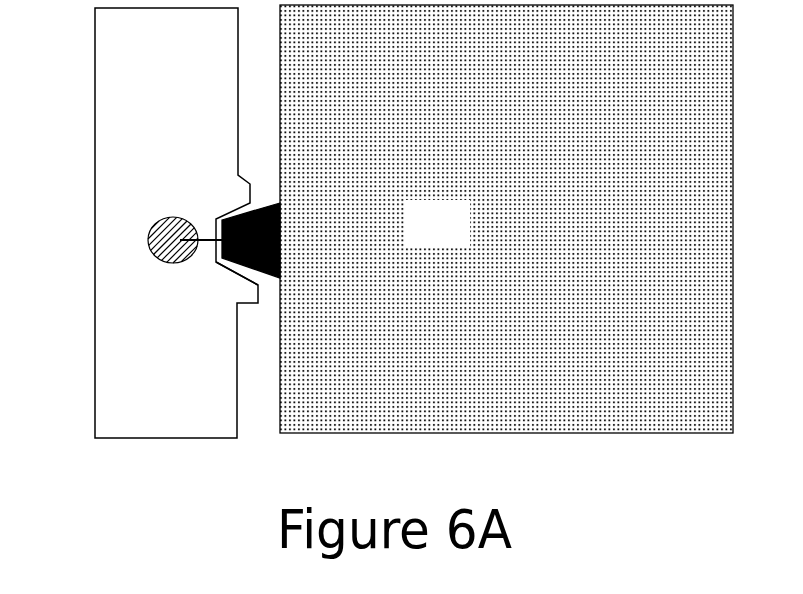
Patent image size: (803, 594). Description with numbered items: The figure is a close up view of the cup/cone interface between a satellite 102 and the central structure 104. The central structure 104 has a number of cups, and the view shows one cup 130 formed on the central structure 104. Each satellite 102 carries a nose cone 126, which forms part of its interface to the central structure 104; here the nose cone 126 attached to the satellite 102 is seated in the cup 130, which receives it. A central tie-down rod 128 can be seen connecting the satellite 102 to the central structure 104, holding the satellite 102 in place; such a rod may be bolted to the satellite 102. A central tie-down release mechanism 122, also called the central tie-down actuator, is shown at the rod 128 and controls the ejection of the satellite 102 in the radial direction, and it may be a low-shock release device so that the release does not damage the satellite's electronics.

The satellite 102 is at (458, 236).
The central structure 104 is at (183, 96).
The central tie-down release mechanism 122 is at (148, 242).
The nose cone 126 is at (283, 262).
The central tie-down rod 128 is at (210, 235).
The cup 130 is at (227, 272).